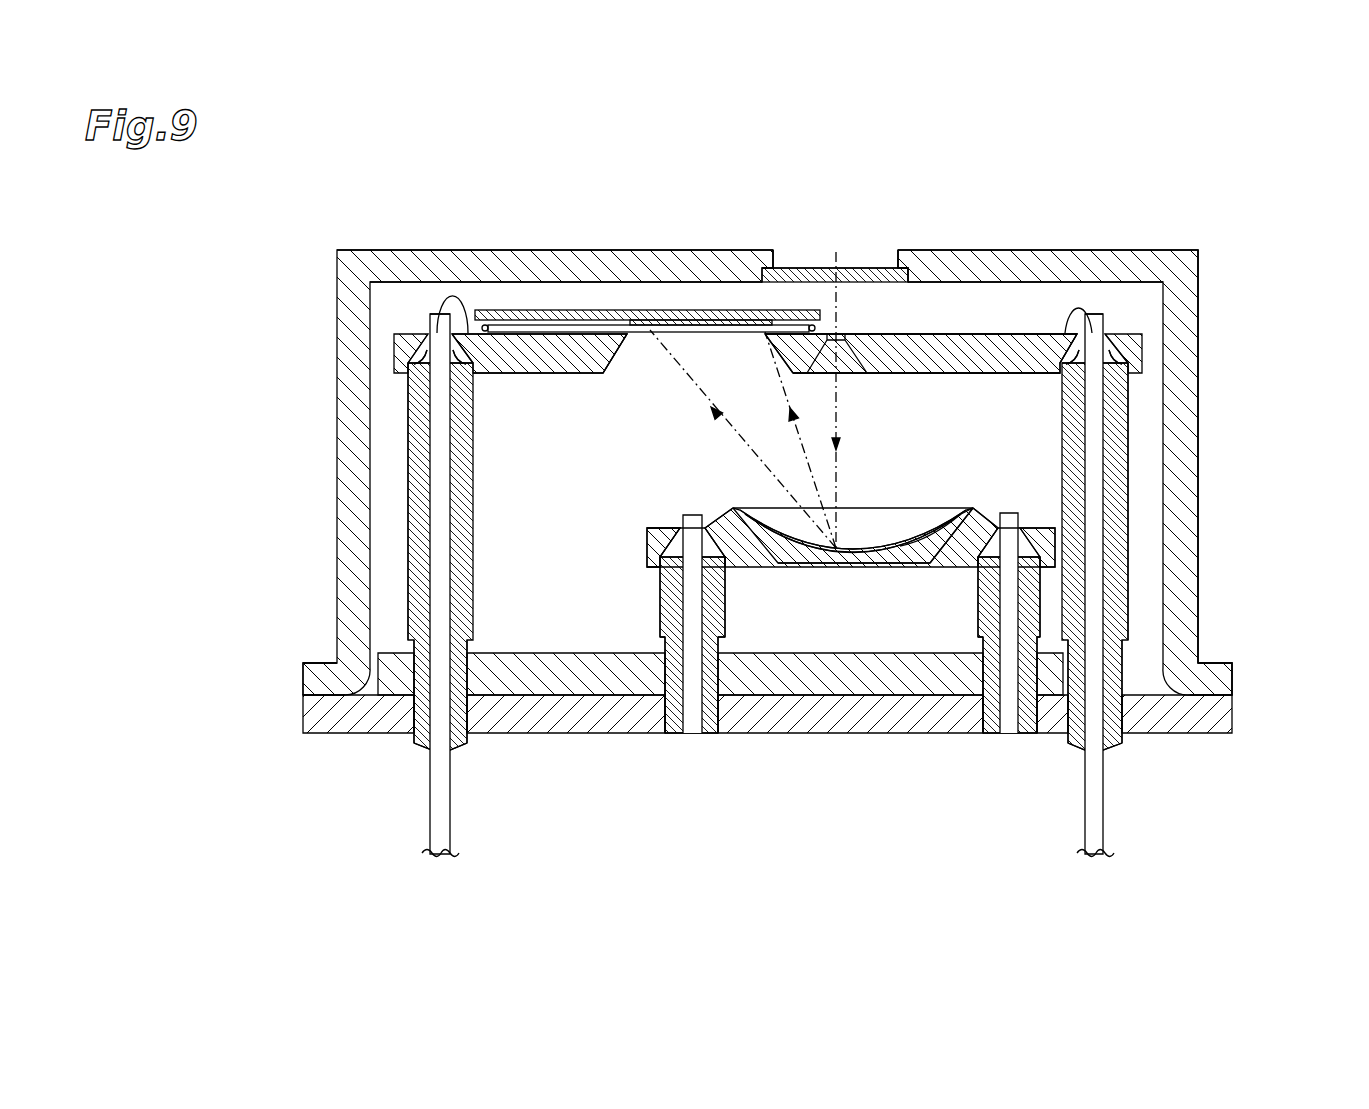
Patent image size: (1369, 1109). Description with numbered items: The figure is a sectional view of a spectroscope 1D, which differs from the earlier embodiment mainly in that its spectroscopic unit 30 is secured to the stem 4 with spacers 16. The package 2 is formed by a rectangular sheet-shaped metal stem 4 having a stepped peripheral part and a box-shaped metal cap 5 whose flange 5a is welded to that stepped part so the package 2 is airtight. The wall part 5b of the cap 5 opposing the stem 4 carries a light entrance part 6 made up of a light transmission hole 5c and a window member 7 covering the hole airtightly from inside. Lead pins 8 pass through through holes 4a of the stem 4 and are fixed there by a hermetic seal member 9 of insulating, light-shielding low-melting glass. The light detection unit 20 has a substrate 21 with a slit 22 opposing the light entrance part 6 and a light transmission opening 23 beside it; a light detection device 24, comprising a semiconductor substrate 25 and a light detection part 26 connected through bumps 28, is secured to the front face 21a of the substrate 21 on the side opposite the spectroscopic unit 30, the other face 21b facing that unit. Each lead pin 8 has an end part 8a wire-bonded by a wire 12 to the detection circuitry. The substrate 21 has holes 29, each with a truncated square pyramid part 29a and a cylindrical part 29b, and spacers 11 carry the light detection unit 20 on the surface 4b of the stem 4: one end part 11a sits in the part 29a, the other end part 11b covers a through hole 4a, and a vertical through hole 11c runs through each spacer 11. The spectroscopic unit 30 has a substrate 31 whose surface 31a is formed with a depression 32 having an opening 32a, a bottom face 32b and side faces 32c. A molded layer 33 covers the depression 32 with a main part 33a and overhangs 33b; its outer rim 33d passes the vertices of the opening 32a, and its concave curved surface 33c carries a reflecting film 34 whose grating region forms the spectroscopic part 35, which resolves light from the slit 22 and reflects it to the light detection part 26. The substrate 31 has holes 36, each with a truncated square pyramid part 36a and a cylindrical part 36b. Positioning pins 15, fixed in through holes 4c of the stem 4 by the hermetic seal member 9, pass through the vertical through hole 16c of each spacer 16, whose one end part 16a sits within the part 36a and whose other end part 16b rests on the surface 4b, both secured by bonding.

The spectroscope 1D is at (1246, 211).
The package 2 is at (1202, 355).
The stem 4 is at (1175, 734).
The through hole 4a is at (460, 732).
The surface 4b is at (518, 652).
The through hole 4c is at (720, 712).
The cap 5 is at (1178, 262).
The flange 5a is at (1216, 665).
The wall part 5b is at (1050, 262).
The light transmission hole 5c is at (803, 258).
The light entrance part 6 is at (878, 178).
The window member 7 is at (852, 273).
The lead pin 8 is at (437, 858).
The end part 8a is at (443, 325).
The hermetic seal member 9 is at (420, 746).
The spacer 11 is at (415, 457).
The one end part 11a is at (433, 323).
The other end part 11b is at (416, 700).
The vertical through hole 11c is at (437, 518).
The wire 12 is at (466, 318).
The positioning pin 15 is at (685, 746).
The spacer 16 is at (660, 600).
The one end part 16a is at (690, 555).
The other end part 16b is at (720, 692).
The vertical through hole 16c is at (665, 640).
The light detection unit 20 is at (392, 345).
The substrate 21 is at (538, 374).
The front face 21a is at (958, 332).
The support plate lower surface 21b is at (935, 374).
The slit 22 is at (853, 356).
The light transmission opening 23 is at (612, 374).
The light detection device 24 is at (548, 306).
The semiconductor substrate 25 is at (598, 318).
The light detection part 26 is at (727, 336).
The bump 28 is at (488, 325).
The hole 29 is at (418, 368).
The truncated square pyramid part 29a is at (465, 374).
The cylindrical part 29b is at (456, 298).
The spectroscopic unit 30 is at (643, 546).
The substrate 31 is at (640, 536).
The surface 31a is at (657, 527).
The depression 32 is at (900, 556).
The opening 32a is at (765, 515).
The bottom face 32b is at (843, 566).
The side faces 32c is at (918, 564).
The molded layer 33 is at (776, 566).
The main part 33a is at (806, 552).
The overhangs 33b is at (950, 535).
The curved surface 33c is at (925, 530).
The outer rim 33d is at (985, 528).
The reflecting film 34 is at (895, 530).
The spectroscopic part 35 is at (845, 525).
The hole 36 is at (725, 570).
The truncated square pyramid part 36a is at (665, 575).
The cylindrical part 36b is at (706, 522).